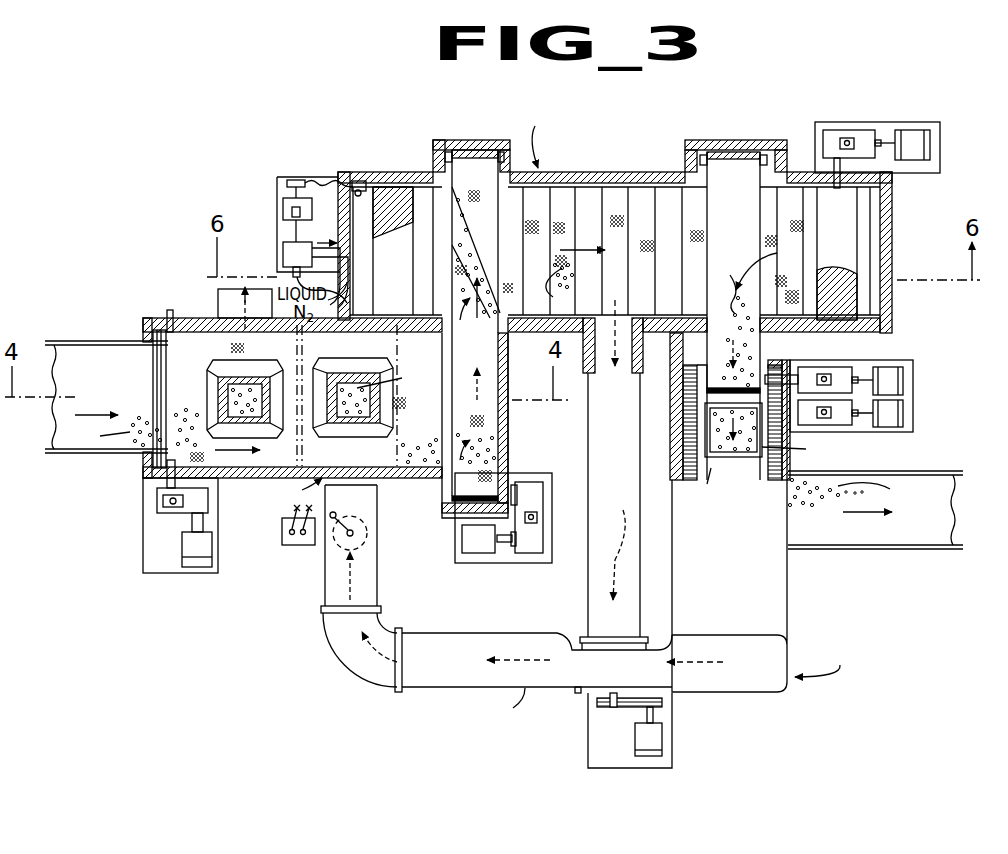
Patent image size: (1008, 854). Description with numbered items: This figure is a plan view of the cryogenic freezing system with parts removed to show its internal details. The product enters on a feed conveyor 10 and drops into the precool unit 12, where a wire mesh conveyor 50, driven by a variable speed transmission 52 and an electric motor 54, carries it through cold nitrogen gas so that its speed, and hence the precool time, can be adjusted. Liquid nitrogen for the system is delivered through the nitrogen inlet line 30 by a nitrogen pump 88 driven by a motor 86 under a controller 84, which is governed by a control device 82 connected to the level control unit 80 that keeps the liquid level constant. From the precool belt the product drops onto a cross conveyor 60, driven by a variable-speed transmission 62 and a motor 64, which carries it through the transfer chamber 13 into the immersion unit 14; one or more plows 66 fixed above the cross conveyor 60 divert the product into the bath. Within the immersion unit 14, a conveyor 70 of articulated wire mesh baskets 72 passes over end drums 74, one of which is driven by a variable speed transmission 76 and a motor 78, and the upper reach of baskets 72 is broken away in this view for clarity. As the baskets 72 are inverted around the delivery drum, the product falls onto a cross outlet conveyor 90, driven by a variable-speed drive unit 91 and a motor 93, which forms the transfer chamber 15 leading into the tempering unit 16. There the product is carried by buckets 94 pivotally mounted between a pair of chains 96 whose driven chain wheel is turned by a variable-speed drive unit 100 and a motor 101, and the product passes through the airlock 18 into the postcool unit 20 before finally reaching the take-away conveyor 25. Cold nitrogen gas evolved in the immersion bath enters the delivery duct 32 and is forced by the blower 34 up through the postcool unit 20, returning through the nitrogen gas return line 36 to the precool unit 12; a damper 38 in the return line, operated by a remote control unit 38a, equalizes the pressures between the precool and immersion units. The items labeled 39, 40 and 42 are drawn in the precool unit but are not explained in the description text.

The feed conveyor 10 is at (52, 431).
The precool unit 12 is at (256, 424).
The transfer chamber 13 is at (507, 425).
The immersion unit 14 is at (642, 243).
The transfer chamber 15 is at (697, 345).
The tempering unit 16 is at (740, 533).
The airlock 18 is at (790, 587).
The postcool unit 20 is at (760, 699).
The take-away conveyor 25 is at (907, 550).
The nitrogen inlet line 30 is at (344, 247).
The delivery duct 32 is at (630, 463).
The blower 34 is at (577, 693).
The nitrogen gas return line 36 is at (458, 636).
The damper 38 is at (368, 537).
The remote control unit 38a is at (288, 545).
The product tray 39 is at (361, 362).
The nitrogen spray nozzle 40 is at (306, 350).
The entry door 42 is at (172, 336).
The wire mesh conveyor 50 is at (145, 321).
The variable speed transmission 52 is at (160, 531).
The electric motor 54 is at (200, 553).
The cross conveyor 60 is at (490, 452).
The variable-speed transmission 62 is at (477, 533).
The motor 64 is at (470, 546).
The plow 66 is at (468, 246).
The conveyor 70 is at (554, 196).
The basket 72 is at (697, 234).
The end drum 74 is at (400, 187).
The variable speed transmission 76 is at (833, 131).
The motor 78 is at (910, 130).
The level control unit 80 is at (364, 181).
The control device 82 is at (290, 180).
The controller 84 is at (290, 214).
The motor 86 is at (288, 203).
The nitrogen pump 88 is at (283, 254).
The cross outlet conveyor 90 is at (728, 167).
The variable-speed drive unit 91 is at (812, 368).
The motor 93 is at (890, 367).
The bucket 94 is at (707, 437).
The chain 96 is at (803, 438).
The variable-speed drive unit 100 is at (845, 404).
The motor 101 is at (895, 413).